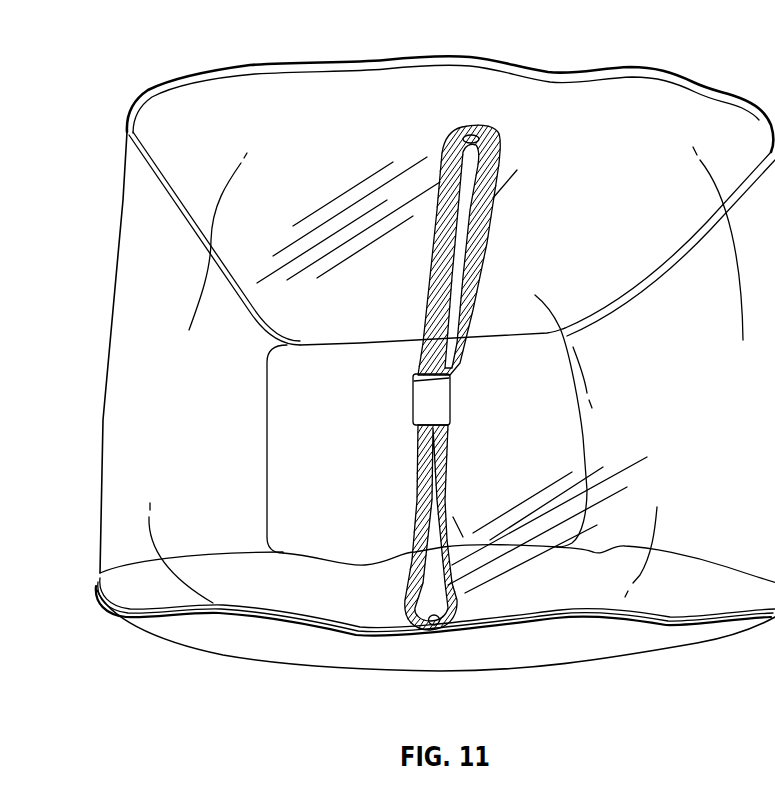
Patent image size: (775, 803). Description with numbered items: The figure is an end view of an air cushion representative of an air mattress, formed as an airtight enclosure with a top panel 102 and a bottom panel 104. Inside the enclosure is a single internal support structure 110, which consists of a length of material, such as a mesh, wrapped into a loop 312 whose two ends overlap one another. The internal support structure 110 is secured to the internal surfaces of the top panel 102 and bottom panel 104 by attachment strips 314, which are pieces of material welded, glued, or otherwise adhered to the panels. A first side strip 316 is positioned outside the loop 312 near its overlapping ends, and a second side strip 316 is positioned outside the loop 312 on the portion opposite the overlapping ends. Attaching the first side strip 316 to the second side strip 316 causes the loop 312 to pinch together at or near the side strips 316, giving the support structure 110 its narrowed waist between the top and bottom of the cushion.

The top panel 102 is at (573, 107).
The bottom panel 104 is at (643, 640).
The internal support structure 110 is at (413, 525).
The loop 312 is at (405, 606).
The attachment strip 314 is at (464, 140).
The side strip 316 is at (450, 400).